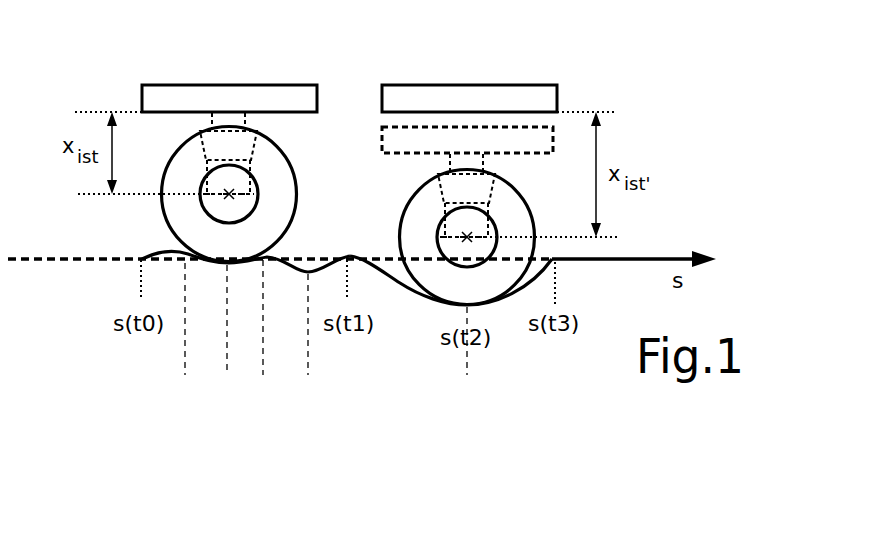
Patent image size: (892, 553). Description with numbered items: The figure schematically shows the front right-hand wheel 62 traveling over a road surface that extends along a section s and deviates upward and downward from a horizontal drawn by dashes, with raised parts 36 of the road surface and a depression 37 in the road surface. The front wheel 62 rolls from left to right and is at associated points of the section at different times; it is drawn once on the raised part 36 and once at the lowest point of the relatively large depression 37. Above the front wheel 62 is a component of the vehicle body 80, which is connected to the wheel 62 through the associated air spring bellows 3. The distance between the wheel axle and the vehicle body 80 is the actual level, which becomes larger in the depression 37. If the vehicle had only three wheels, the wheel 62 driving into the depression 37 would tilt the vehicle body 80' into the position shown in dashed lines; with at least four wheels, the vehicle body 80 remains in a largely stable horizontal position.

The vehicle body 80 is at (349, 68).
The vehicle body in tilted position 80' is at (442, 89).
The air spring bellows 3 is at (262, 152).
The front right-hand wheel 62 is at (298, 190).
The raised part of the road surface 36 is at (178, 251).
The depression in the road surface 37 is at (414, 296).